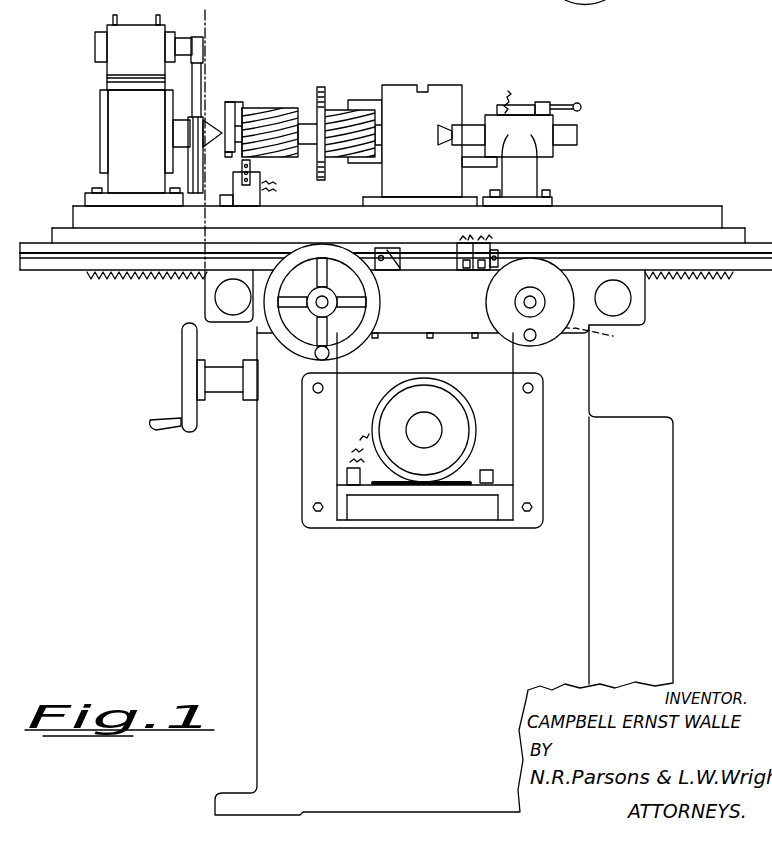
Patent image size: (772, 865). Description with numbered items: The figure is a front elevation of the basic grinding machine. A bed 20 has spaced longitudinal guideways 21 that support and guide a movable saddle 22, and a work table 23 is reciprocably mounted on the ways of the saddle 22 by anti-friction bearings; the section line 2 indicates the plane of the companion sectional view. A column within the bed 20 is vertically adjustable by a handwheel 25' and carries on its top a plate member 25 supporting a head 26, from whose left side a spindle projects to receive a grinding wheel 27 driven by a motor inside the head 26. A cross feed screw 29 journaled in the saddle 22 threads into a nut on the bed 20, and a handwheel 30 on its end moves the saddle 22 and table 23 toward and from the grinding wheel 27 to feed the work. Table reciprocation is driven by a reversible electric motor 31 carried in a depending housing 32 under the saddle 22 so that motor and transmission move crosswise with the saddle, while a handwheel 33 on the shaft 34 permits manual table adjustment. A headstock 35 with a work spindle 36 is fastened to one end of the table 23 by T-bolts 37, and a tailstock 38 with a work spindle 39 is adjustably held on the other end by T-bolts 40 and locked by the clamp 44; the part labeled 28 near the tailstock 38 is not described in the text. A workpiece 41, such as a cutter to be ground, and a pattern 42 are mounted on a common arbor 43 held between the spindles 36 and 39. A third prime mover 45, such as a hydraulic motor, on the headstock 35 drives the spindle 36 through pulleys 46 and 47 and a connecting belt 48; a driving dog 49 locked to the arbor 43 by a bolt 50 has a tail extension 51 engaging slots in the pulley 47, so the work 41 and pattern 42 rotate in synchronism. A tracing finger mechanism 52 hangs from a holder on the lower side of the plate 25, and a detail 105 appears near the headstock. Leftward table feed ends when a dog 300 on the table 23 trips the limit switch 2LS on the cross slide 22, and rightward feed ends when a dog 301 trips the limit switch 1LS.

The section line 2 is at (205, 15).
The bed 20 is at (575, 400).
The longitudinal guideways 21 is at (305, 325).
The saddle 22 is at (640, 300).
The work table 23 is at (610, 218).
The plate member 25 is at (396, 241).
The handwheel 25' is at (156, 377).
The head 26 is at (442, 88).
The grinding wheel 27 is at (325, 88).
The tailstock 28 is at (483, 108).
The cross feed screw 29 is at (340, 302).
The handwheel 30 is at (353, 342).
The electric motor 31 is at (410, 465).
The depending housing 32 is at (333, 410).
The handwheel 33 is at (540, 345).
The shaft 34 is at (525, 310).
The headstock 35 is at (117, 132).
The work spindle 36 is at (180, 134).
The T-bolts 37 is at (92, 191).
The tailstock 38 is at (543, 122).
The work spindle 39 is at (467, 130).
The T-bolts 40 is at (540, 191).
The workpiece 41 is at (337, 110).
The pattern 42 is at (280, 110).
The arbor 43 is at (307, 127).
The clamp 44 is at (543, 105).
The third prime mover 45 is at (120, 62).
The pulley 46 is at (207, 44).
The pulley 47 is at (207, 78).
The connecting belt 48 is at (207, 63).
The driving dog 49 is at (246, 100).
The bolt 50 is at (228, 158).
The tail extension 51 is at (212, 103).
The tracing finger mechanism 52 is at (248, 205).
The terminal strip 105 is at (252, 160).
The dog 300 is at (405, 246).
The dog 301 is at (500, 242).
The limit switch 2LS is at (457, 262).
The limit switch 1LS is at (478, 272).